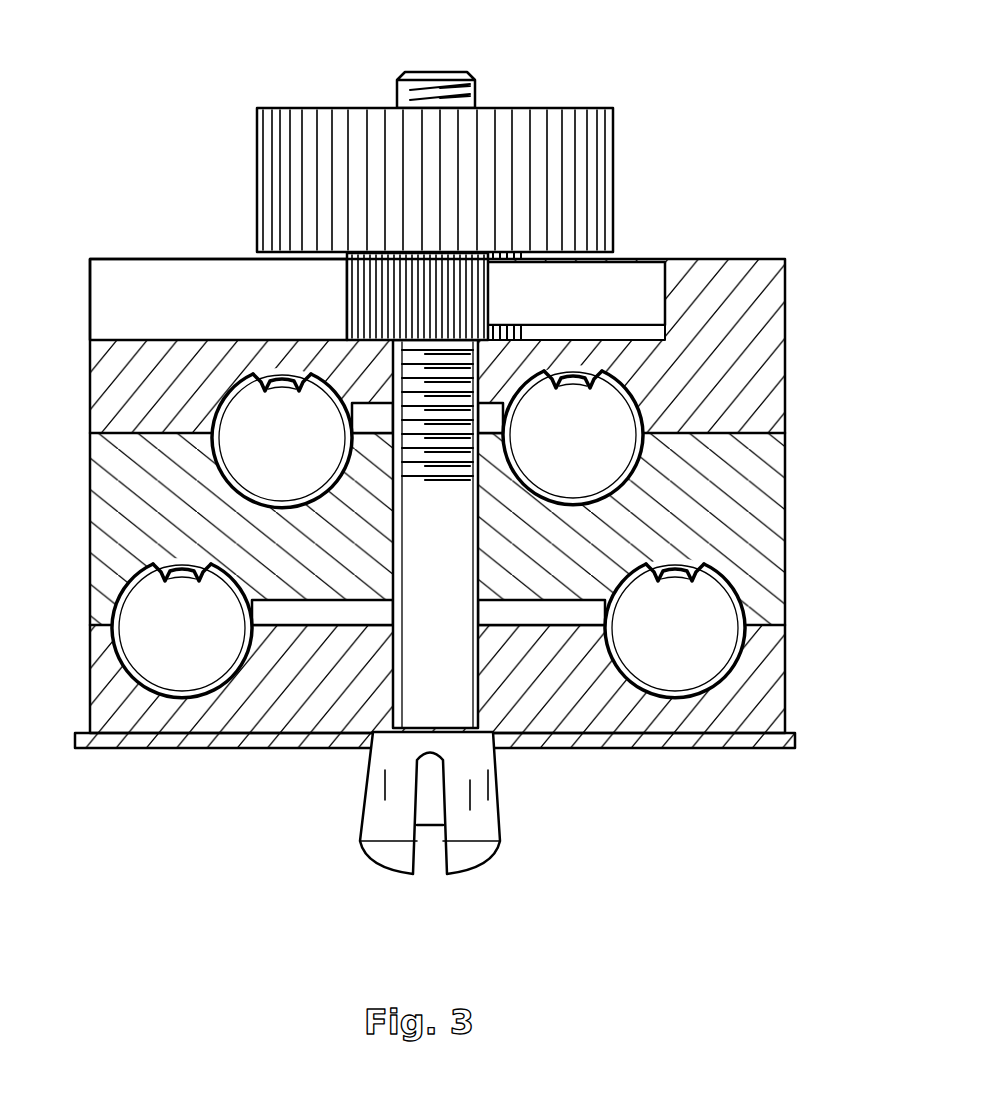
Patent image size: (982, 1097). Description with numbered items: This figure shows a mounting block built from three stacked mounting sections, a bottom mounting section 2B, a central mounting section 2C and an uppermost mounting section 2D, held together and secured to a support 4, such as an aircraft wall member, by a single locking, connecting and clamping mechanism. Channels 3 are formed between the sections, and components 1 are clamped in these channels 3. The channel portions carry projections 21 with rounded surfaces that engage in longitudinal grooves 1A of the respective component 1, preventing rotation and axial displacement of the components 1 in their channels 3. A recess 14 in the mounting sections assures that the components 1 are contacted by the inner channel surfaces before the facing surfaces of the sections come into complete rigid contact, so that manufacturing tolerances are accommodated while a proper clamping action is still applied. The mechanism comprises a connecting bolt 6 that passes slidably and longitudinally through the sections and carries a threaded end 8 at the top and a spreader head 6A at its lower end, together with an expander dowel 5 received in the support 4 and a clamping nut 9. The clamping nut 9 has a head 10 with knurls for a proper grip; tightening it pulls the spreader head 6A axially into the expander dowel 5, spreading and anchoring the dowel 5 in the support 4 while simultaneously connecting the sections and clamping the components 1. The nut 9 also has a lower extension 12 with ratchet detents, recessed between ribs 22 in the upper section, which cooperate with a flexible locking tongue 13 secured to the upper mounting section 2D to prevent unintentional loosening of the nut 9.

The component 1 is at (240, 412).
The longitudinal groove 1A is at (282, 438).
The bottom mounting section 2B is at (757, 679).
The central mounting section 2C is at (733, 481).
The uppermost mounting section 2D is at (765, 297).
The channel 3 is at (215, 418).
The support 4 is at (628, 741).
The expander dowel 5 is at (488, 807).
The connecting bolt 6 is at (421, 79).
The spreader head 6A is at (430, 816).
The threaded end 8 is at (478, 88).
The clamping nut 9 is at (600, 150).
The head 10 is at (257, 148).
The lower extension 12 is at (351, 269).
The locking tongue 13 is at (640, 276).
The recess 14 is at (368, 414).
The projection 21 is at (287, 413).
The rib 22 is at (127, 272).